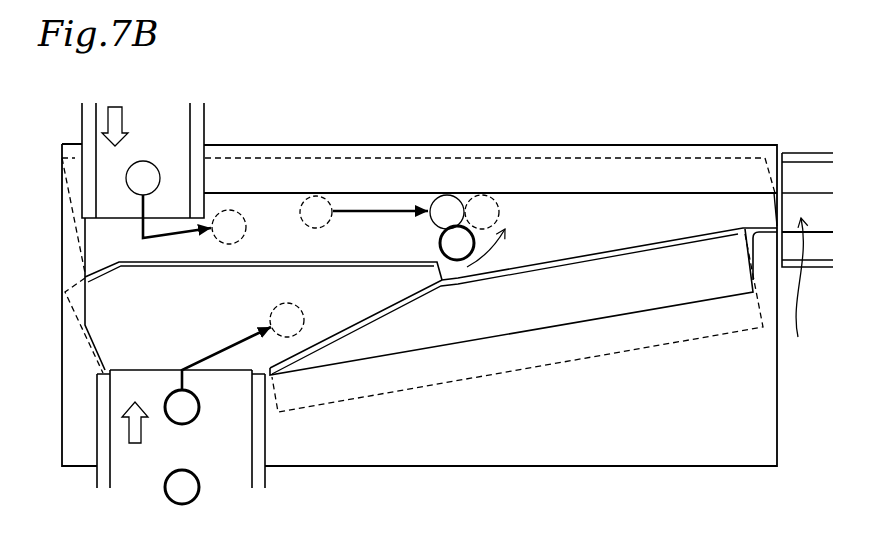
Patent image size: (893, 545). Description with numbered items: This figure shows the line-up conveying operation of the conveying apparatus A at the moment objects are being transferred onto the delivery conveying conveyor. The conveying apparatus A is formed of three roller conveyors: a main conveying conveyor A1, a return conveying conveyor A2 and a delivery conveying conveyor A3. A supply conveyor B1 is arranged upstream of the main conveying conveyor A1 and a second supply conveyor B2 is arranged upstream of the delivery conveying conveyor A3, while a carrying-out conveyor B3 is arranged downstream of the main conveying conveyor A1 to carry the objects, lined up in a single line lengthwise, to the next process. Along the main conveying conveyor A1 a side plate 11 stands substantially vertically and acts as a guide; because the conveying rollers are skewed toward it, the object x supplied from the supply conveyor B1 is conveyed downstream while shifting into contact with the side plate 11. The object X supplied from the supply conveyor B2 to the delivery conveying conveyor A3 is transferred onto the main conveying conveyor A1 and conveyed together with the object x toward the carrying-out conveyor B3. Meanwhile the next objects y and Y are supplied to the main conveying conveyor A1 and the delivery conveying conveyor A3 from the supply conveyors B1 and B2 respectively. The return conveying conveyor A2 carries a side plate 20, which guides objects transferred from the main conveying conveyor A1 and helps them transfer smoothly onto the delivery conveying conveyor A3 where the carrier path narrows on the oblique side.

The conveying apparatus A is at (670, 143).
The main conveying conveyor A1 is at (571, 231).
The return conveying conveyor A2 is at (581, 287).
The delivery conveying conveyor A3 is at (167, 335).
The supply conveyor B1 is at (186, 122).
The supply conveyor B2 is at (222, 437).
The carrying-out conveyor B3 is at (807, 253).
The side plate 11 is at (742, 196).
The side plate 20 is at (697, 308).